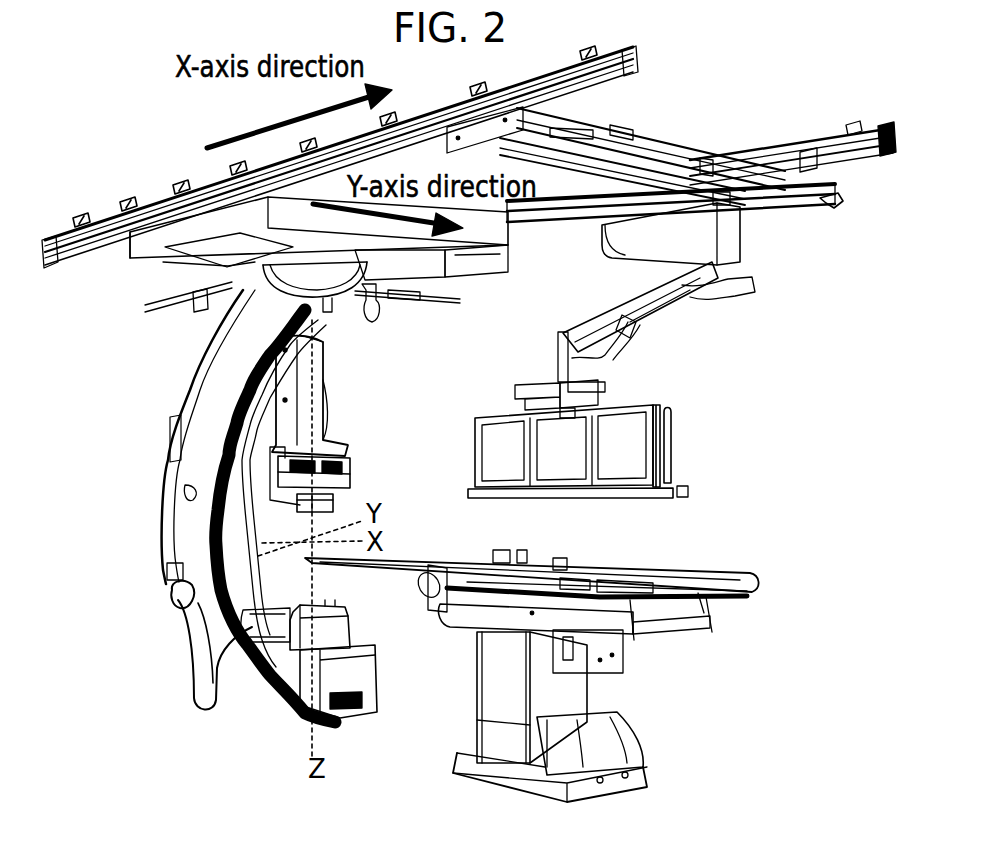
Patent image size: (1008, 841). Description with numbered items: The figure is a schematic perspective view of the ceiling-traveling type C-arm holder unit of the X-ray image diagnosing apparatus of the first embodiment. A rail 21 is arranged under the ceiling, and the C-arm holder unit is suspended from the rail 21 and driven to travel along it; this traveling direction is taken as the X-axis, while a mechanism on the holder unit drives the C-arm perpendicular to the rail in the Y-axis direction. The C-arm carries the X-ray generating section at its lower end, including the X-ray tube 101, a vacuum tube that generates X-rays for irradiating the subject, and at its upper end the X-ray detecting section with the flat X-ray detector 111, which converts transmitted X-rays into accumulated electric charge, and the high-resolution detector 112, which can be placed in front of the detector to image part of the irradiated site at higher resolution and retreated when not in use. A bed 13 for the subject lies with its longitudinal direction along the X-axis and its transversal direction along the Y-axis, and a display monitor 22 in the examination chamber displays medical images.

The rail 21 is at (177, 191).
The display monitor 22 is at (638, 412).
The bed 13 is at (697, 571).
The flat X-ray detector 111 is at (324, 451).
The high-resolution detector 112 is at (332, 500).
The X-ray tube 101 is at (333, 641).